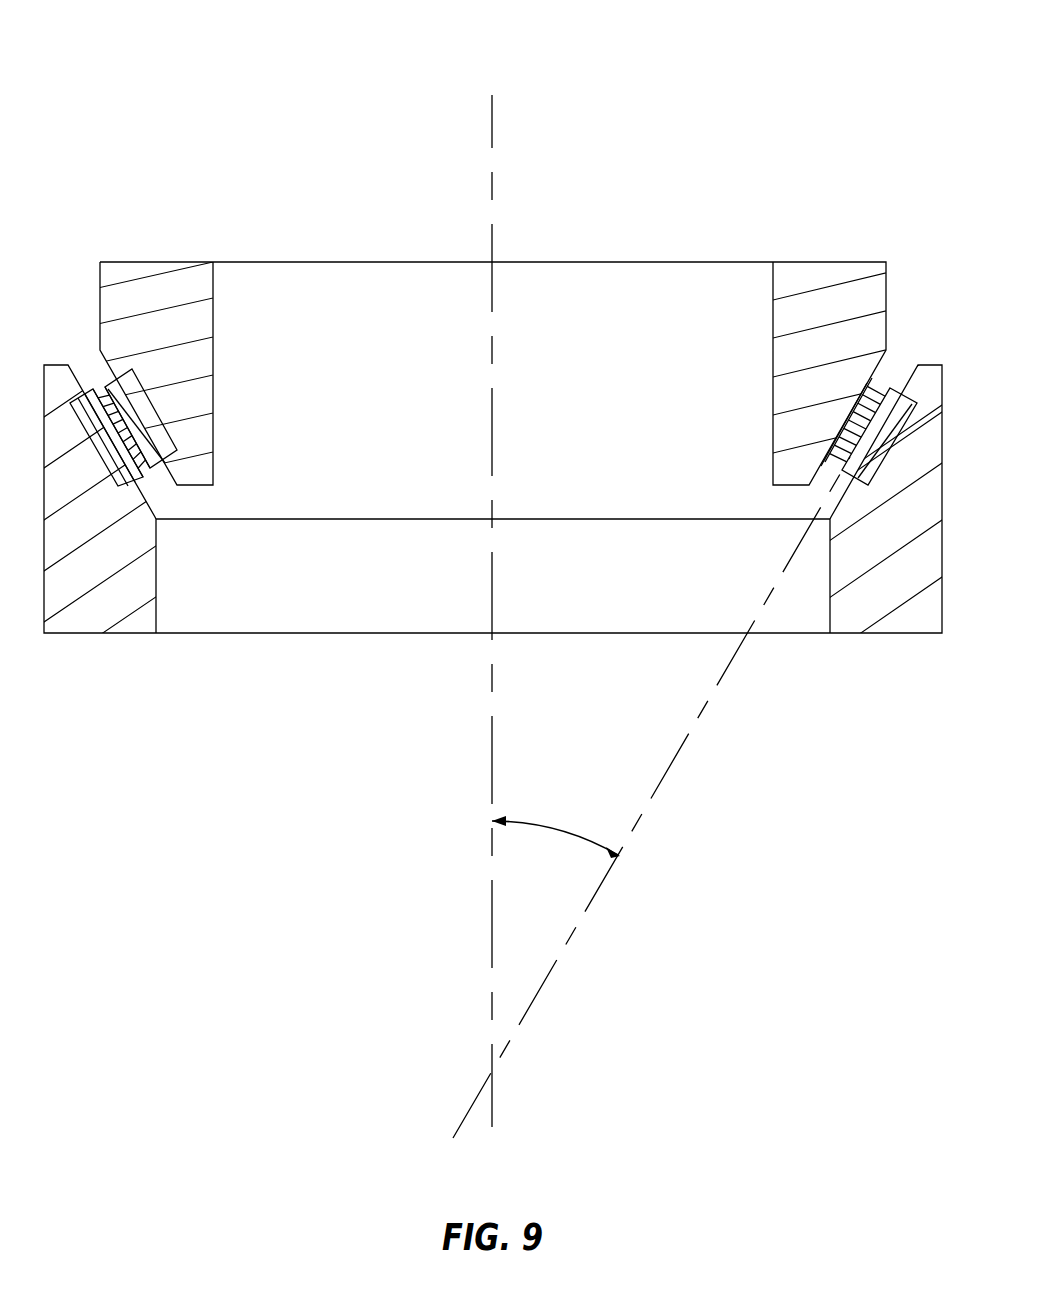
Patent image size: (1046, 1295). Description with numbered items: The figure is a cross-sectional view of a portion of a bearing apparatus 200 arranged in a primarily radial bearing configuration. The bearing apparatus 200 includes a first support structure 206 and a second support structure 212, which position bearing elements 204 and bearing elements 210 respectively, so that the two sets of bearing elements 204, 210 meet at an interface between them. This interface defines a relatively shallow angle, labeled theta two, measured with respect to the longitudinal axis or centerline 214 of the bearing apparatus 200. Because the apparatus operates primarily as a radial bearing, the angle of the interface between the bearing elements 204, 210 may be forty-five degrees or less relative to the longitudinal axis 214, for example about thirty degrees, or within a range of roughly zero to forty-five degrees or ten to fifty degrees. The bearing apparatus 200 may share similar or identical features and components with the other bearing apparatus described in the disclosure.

The bearing apparatus 200 is at (495, 569).
The bearing elements 204 is at (850, 428).
The first support structure 206 is at (165, 335).
The bearing elements 210 is at (860, 477).
The second support structure 212 is at (138, 603).
The longitudinal axis or centerline 214 is at (493, 118).